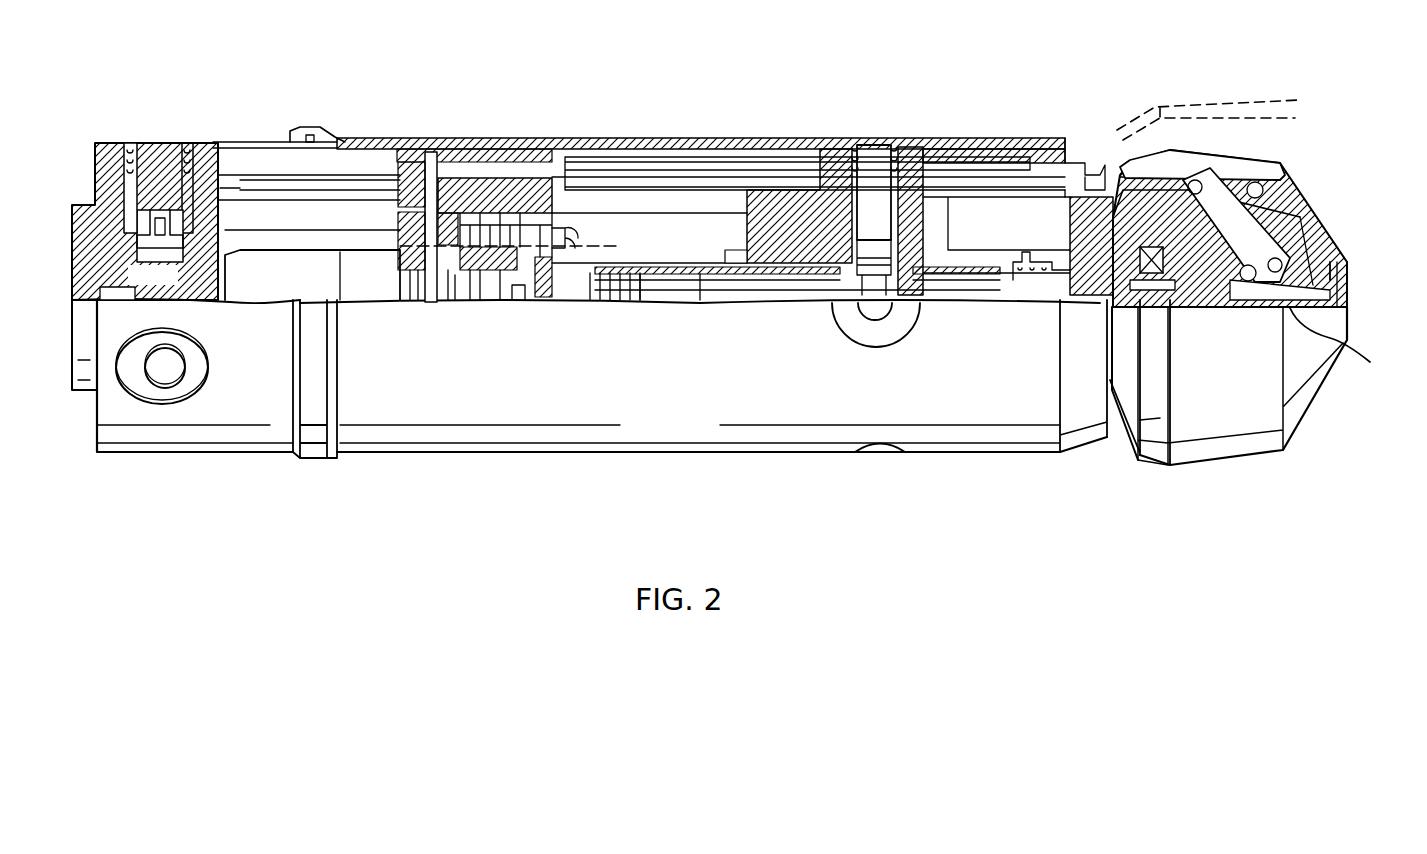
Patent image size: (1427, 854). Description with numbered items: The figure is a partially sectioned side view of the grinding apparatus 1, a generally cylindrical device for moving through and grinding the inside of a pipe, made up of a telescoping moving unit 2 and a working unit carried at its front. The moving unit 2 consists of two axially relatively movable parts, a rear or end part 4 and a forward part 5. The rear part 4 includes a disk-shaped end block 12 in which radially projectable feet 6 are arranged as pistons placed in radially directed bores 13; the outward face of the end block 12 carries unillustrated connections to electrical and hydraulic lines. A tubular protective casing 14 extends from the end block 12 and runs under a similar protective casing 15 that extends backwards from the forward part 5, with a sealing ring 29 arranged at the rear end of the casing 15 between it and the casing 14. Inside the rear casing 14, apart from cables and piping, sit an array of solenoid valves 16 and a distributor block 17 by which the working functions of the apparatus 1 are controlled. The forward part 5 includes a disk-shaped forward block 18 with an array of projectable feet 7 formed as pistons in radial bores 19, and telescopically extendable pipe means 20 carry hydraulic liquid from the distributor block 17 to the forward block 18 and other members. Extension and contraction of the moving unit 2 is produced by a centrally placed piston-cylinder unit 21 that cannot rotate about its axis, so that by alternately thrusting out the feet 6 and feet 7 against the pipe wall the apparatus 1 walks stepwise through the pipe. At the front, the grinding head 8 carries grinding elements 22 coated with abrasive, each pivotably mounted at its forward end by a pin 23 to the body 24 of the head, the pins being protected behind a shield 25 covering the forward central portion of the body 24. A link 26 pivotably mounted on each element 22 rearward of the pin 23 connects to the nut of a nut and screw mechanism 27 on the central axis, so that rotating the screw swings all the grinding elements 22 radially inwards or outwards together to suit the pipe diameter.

The grinding apparatus 1 is at (519, 470).
The moving unit 2 is at (516, 103).
The rear or end part 4 is at (243, 456).
The forward part 5 is at (757, 456).
The radially projectable feet 6 is at (167, 388).
The radially projectable feet 7 is at (874, 157).
The grinding head 8 is at (1256, 462).
The end block 12 is at (83, 203).
The radially directed bores 13 is at (129, 143).
The tubular protective casing 14 is at (270, 142).
The protective casing 15 is at (750, 147).
The solenoid valves 16 is at (337, 257).
The distributor block 17 is at (413, 150).
The forward block 18 is at (827, 170).
The radial bores 19 is at (893, 157).
The pipe means 20 is at (627, 170).
The piston-cylinder unit 21 is at (745, 295).
The grinding elements 22 is at (1207, 128).
The pin 23 is at (1258, 185).
The body 24 is at (1313, 212).
The shield 25 is at (1335, 252).
The link 26 is at (1250, 240).
The nut and screw mechanism 27 is at (1344, 347).
The sealing ring 29 is at (317, 462).